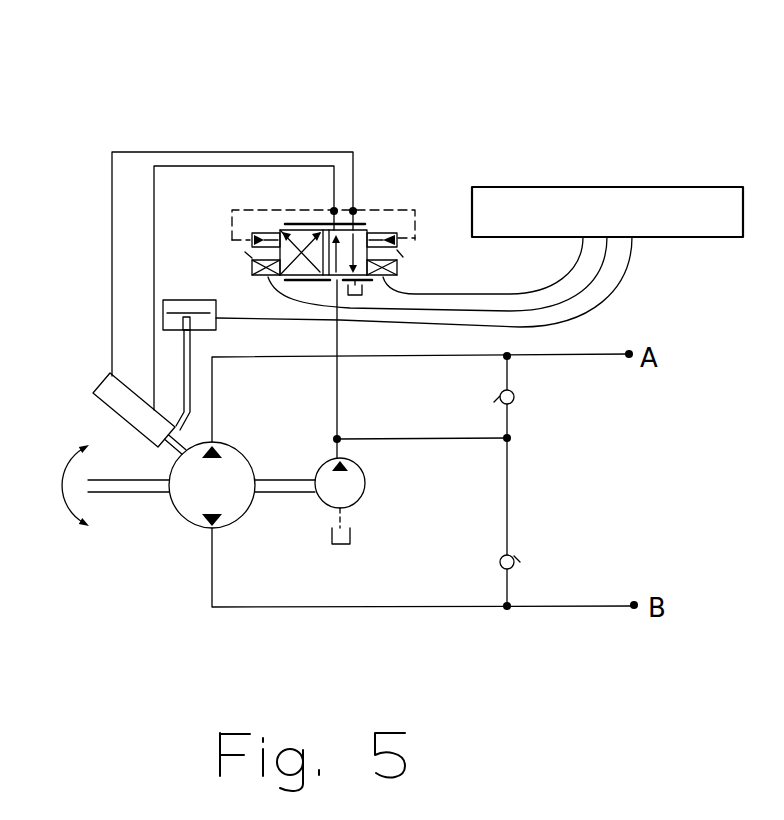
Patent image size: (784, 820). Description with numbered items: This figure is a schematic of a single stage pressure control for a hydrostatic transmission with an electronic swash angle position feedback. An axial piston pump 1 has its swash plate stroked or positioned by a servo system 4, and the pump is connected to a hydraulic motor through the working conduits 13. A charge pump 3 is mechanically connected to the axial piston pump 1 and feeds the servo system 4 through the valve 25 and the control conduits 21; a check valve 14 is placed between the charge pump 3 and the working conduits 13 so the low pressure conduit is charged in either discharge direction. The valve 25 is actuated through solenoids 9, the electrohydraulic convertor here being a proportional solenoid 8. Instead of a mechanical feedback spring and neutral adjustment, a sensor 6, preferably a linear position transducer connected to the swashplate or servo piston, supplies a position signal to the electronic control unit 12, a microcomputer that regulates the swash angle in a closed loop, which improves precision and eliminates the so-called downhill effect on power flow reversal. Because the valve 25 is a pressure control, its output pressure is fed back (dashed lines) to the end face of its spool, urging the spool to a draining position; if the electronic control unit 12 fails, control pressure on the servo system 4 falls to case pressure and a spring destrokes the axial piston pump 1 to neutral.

The axial piston pump 1 is at (192, 515).
The charge pump 3 is at (352, 485).
The servo system 4 is at (97, 385).
The sensor 6 is at (176, 322).
The proportional solenoid 8 is at (252, 265).
The solenoids 9 is at (265, 237).
The electronic control unit 12 is at (567, 193).
The working conduits 13 is at (631, 368).
The check valve 14 is at (513, 402).
The control conduits 21 is at (272, 165).
The valve 25 is at (368, 210).